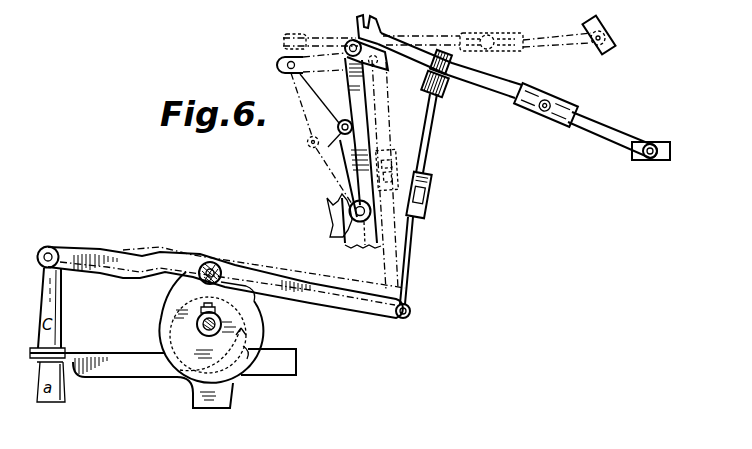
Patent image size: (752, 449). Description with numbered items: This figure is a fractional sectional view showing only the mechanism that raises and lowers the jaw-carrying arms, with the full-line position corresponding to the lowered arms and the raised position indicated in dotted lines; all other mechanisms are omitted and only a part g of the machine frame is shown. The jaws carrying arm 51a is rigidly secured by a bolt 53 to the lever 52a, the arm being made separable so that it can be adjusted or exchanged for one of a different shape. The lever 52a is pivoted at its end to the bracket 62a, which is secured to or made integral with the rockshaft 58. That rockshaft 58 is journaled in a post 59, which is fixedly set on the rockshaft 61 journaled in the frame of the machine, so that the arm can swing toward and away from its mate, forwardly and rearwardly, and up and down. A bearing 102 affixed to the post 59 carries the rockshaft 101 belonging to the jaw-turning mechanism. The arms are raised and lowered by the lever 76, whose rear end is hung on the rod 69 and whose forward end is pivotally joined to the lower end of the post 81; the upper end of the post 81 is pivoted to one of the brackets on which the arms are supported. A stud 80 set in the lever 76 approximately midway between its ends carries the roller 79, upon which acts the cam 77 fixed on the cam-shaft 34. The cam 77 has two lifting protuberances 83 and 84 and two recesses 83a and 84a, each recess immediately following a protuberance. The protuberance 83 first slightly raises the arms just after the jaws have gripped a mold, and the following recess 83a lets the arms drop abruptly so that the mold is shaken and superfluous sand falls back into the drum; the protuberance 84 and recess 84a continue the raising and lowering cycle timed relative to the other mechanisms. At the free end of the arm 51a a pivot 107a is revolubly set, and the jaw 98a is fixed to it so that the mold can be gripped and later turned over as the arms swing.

The cam-shaft 34 is at (215, 318).
The jaws carrying arm 51a is at (594, 132).
The lever 52a is at (483, 86).
The bolt 53 is at (550, 102).
The rockshaft 58 is at (351, 43).
The post 59 is at (379, 113).
The rockshaft 61 is at (357, 153).
The bracket 62a is at (386, 67).
The rod 69 is at (49, 246).
The lever 76 is at (361, 308).
The cam 77 is at (163, 328).
The roller 79 is at (220, 264).
The stud 80 is at (208, 262).
The post 81 is at (425, 137).
The lifting protuberance 83 is at (188, 288).
The recess 83a is at (259, 294).
The lifting protuberance 84 is at (264, 331).
The recess 84a is at (249, 351).
The jaw 98a is at (670, 153).
The rockshaft 101 is at (321, 138).
The bearing 102 is at (320, 100).
The pivot 107a is at (652, 144).
The frame part g is at (340, 203).